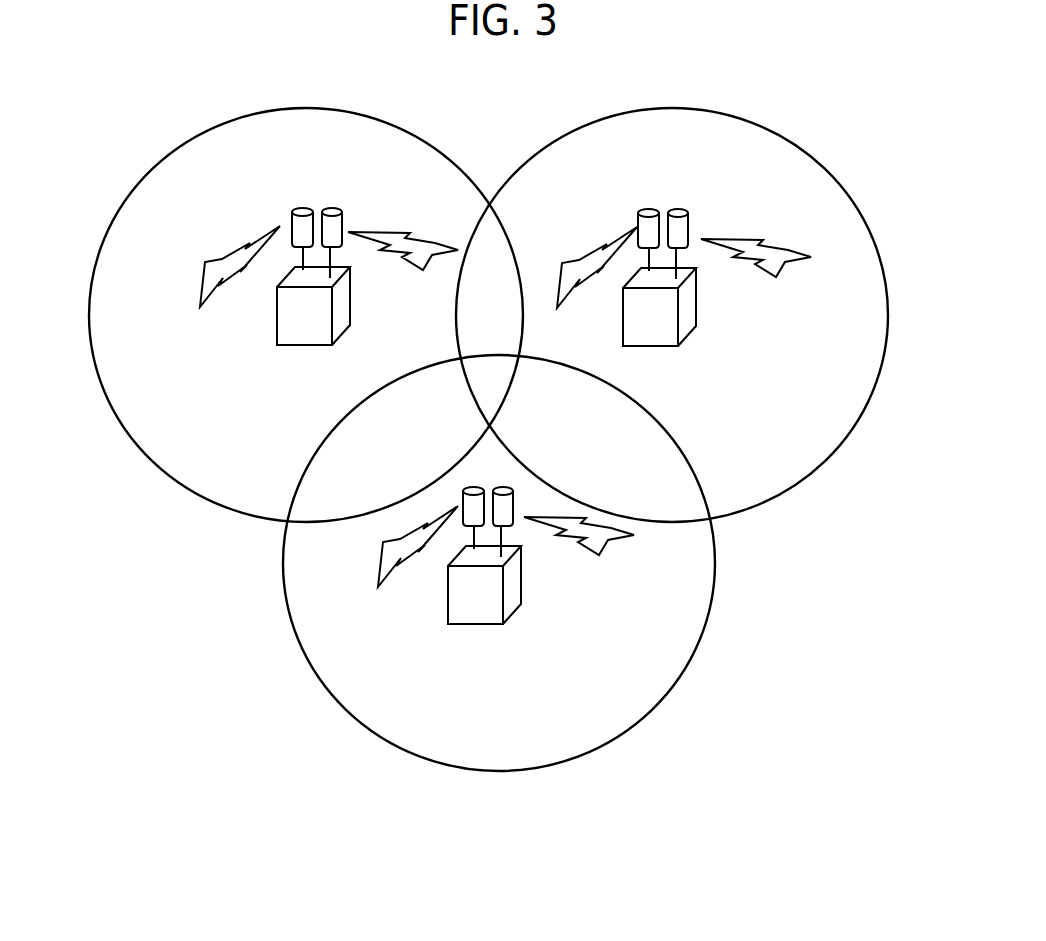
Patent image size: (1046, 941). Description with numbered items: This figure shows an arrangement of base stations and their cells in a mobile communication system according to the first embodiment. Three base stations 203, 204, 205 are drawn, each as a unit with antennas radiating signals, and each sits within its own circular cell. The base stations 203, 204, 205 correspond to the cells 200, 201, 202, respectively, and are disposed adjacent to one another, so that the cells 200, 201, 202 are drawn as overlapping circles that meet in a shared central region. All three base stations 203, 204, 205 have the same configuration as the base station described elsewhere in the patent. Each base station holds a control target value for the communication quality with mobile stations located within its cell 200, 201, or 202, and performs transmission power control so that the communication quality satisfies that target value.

The cell 200 is at (170, 448).
The cell 201 is at (630, 682).
The cell 202 is at (803, 423).
The base station 203 is at (292, 336).
The base station 204 is at (463, 602).
The base station 205 is at (692, 317).